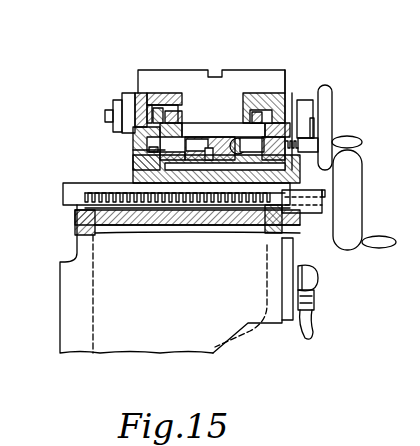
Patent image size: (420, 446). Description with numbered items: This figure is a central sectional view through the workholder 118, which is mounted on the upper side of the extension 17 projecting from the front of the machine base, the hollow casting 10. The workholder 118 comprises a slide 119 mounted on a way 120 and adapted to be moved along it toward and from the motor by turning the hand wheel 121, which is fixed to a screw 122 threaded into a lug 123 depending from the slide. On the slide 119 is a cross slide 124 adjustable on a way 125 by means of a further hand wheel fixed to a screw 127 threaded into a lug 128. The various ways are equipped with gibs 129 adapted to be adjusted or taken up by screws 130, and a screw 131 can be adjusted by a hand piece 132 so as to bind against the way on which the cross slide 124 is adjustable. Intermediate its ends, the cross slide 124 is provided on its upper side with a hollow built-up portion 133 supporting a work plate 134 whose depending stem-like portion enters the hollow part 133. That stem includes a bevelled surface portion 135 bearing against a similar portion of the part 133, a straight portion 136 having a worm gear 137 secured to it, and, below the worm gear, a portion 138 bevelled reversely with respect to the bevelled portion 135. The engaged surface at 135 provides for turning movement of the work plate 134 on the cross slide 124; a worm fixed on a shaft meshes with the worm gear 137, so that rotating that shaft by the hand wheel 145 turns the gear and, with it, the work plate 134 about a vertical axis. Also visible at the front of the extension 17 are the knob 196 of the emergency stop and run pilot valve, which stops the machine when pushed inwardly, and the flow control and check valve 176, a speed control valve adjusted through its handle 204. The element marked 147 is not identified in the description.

The hollow casting 10 is at (102, 358).
The extension 17 is at (246, 342).
The workholder 118 is at (262, 40).
The slide 119 is at (134, 175).
The way 120 is at (68, 192).
The hand wheel 121 is at (355, 224).
The screw 122 is at (86, 207).
The lug 123 is at (205, 215).
The cross slide 124 is at (140, 154).
The way 125 is at (134, 133).
The screw 127 is at (232, 146).
The lug 128 is at (210, 148).
The gibs 129 is at (133, 151).
The screws 130 is at (289, 95).
The screw 131 is at (318, 128).
The hand piece 132 is at (312, 128).
The hollow built-up portion 133 is at (153, 97).
The work plate 134 is at (278, 70).
The bevelled surface portion 135 is at (176, 112).
The straight portion 136 is at (183, 112).
The worm gear 137 is at (163, 110).
The reversely bevelled portion 138 is at (236, 130).
The hand wheel 145 is at (328, 97).
The block 147 is at (146, 137).
The flow control and check valve 176 is at (305, 306).
The knob 196 is at (318, 279).
The handle 204 is at (315, 336).